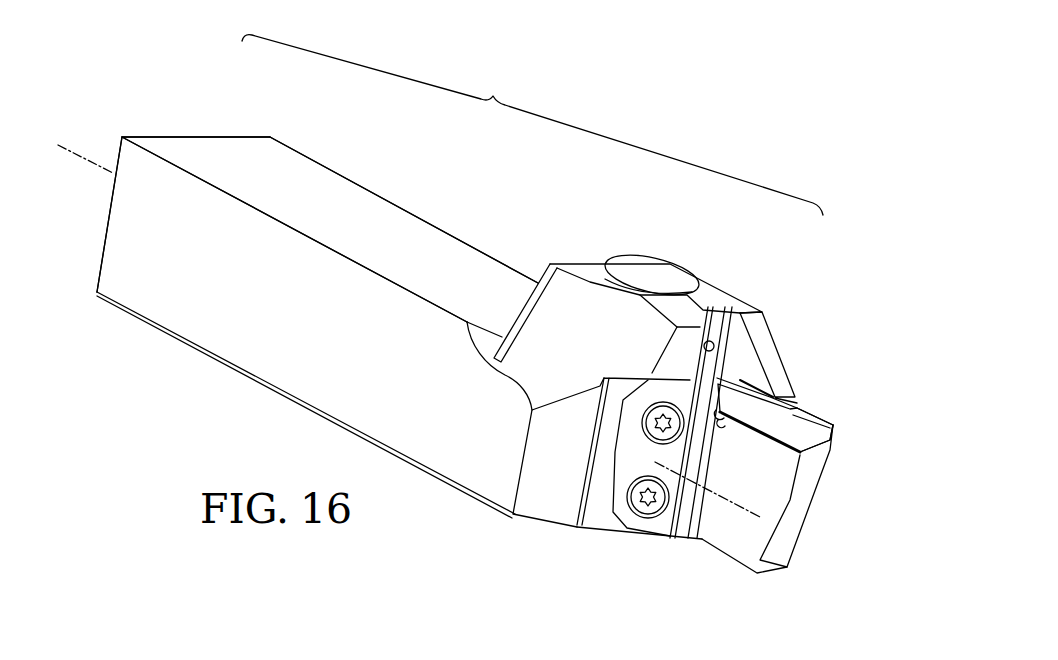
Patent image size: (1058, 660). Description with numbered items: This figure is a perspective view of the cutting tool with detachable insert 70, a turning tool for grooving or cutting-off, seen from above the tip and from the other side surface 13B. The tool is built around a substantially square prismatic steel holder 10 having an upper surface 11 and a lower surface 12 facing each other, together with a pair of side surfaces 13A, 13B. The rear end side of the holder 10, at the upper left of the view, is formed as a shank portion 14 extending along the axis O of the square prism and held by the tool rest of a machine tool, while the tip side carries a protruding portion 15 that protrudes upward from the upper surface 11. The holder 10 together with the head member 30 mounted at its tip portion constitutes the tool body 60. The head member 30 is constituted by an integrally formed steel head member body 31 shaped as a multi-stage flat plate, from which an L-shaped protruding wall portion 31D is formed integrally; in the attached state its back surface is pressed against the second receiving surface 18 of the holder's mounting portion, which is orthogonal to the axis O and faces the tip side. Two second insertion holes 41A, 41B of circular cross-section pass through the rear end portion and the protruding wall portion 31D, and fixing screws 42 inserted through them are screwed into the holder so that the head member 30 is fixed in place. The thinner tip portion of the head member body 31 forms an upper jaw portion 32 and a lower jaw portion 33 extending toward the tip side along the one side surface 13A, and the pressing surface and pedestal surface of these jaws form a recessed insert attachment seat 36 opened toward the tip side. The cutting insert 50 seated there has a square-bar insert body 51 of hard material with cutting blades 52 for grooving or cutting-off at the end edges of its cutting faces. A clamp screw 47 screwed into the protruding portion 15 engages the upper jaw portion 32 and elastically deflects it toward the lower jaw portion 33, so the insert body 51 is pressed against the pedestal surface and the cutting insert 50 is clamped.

The axis O is at (87, 157).
The holder 10 is at (265, 117).
The upper surface 11 is at (210, 148).
The lower surface 12 is at (206, 364).
The one side surface 13A is at (330, 158).
The other side surface 13B is at (157, 302).
The shank portion 14 is at (140, 130).
The protruding portion 15 is at (577, 287).
The second receiving surface 18 is at (602, 520).
The head member 30 is at (738, 276).
The head member body 31 is at (695, 528).
The protruding wall portion 31D is at (657, 530).
The upper jaw portion 32 is at (762, 332).
The lower jaw portion 33 is at (737, 543).
The insert attachment seat 36 is at (768, 453).
The second insertion hole 41A is at (643, 422).
The second insertion hole 41B is at (630, 498).
The fixing screw 42 is at (690, 440).
The clamp screw 47 is at (633, 265).
The cutting insert 50 is at (835, 411).
The insert body 51 is at (826, 438).
The cutting blade 52 is at (833, 437).
The tool body 60 is at (532, 125).
The cutting tool with detachable insert 70 is at (645, 52).